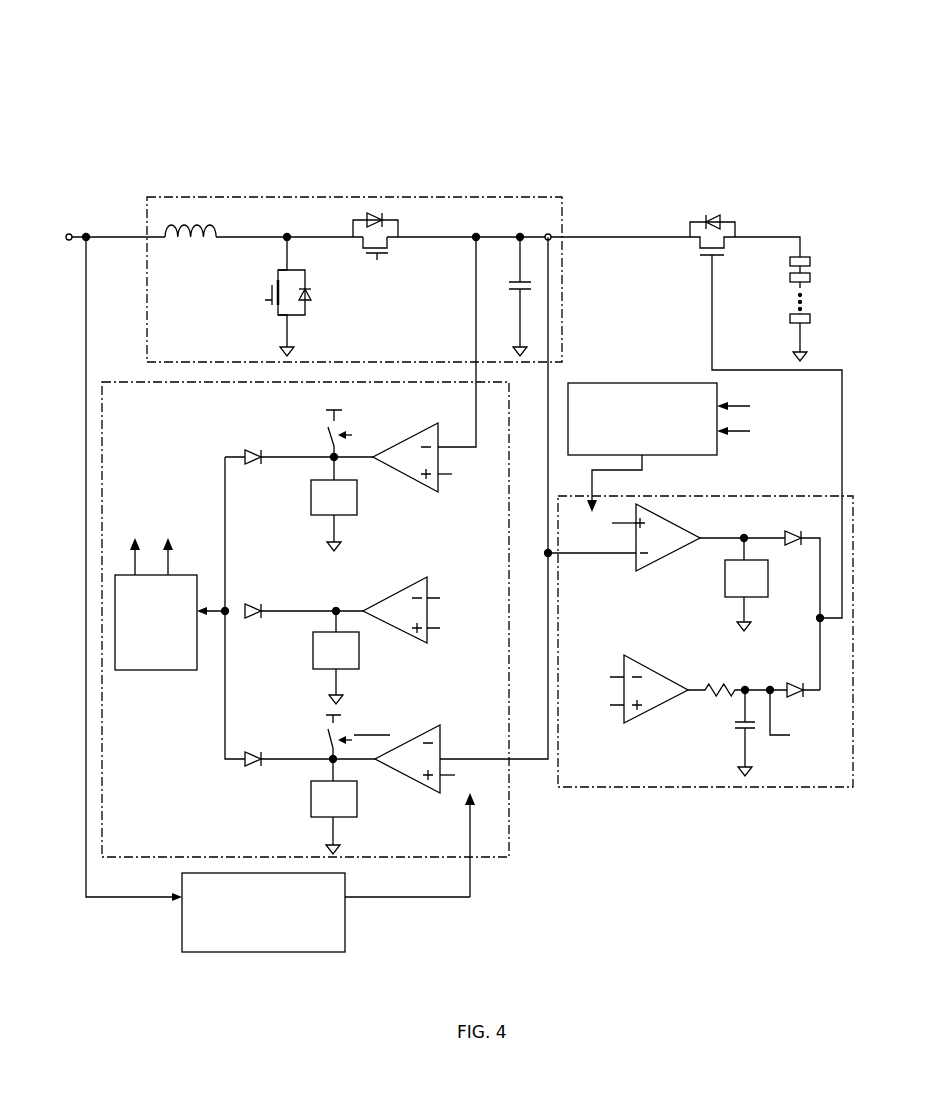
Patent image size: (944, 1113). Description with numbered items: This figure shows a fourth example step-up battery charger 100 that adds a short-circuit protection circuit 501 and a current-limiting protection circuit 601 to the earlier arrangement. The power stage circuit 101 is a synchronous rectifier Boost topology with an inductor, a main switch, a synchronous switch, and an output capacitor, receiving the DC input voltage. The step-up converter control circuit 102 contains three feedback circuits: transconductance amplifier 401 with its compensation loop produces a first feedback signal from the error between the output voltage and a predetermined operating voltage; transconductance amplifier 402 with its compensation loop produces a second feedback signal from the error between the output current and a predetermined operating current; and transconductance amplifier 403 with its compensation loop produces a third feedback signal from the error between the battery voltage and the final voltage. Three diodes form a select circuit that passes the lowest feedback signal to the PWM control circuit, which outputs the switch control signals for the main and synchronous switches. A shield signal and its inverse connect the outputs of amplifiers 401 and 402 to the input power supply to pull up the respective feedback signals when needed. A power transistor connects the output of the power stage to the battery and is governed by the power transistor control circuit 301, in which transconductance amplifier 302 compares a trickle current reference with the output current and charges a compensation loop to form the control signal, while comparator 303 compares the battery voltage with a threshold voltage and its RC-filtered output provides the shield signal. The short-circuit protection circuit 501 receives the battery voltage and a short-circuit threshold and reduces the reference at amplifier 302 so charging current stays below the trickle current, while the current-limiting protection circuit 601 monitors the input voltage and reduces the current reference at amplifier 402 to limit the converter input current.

The step-up battery charger 100 is at (775, 66).
The power stage circuit 101 is at (563, 297).
The step-up converter control circuit 102 is at (512, 851).
The power transistor control circuit 301 is at (735, 788).
The transconductance amplifier 302 is at (660, 553).
The comparator 303 is at (661, 704).
The transconductance amplifier 401 is at (420, 483).
The transconductance amplifier 402 is at (423, 791).
The transconductance amplifier 403 is at (410, 638).
The short-circuit protection circuit 501 is at (680, 456).
The current-limiting protection circuit 601 is at (347, 933).